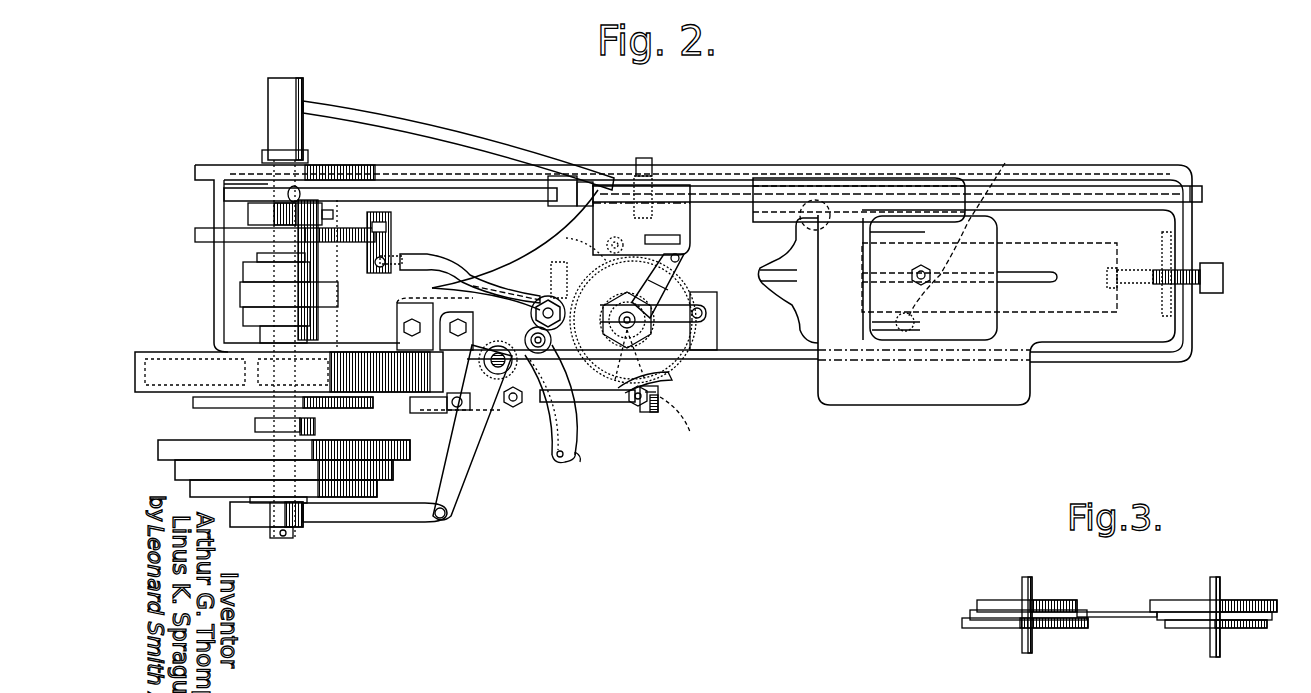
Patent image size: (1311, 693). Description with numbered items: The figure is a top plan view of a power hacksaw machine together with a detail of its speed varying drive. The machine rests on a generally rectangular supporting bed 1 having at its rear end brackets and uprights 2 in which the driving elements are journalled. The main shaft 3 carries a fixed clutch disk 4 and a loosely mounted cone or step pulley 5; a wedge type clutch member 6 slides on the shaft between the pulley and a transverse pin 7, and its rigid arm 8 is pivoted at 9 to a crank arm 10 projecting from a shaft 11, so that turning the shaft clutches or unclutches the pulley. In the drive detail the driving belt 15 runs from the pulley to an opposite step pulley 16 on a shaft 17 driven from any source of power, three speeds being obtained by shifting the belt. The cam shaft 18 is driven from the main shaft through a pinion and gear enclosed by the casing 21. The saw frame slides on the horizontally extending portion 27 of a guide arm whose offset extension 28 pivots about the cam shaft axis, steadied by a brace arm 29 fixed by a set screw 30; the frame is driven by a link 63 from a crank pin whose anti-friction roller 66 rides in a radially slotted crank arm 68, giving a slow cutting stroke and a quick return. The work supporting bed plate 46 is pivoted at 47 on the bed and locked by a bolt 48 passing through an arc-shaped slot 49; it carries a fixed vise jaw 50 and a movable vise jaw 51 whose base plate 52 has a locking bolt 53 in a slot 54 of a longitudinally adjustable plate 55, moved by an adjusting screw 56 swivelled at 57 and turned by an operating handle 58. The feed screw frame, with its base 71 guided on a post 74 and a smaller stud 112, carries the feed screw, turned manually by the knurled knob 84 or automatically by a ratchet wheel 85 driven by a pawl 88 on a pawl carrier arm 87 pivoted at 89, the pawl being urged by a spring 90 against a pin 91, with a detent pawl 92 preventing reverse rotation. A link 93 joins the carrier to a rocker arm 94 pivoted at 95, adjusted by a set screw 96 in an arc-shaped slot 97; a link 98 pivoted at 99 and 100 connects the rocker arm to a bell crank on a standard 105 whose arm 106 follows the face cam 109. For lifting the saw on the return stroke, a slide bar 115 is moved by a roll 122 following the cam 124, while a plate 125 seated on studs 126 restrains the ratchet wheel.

In FIG. 2, the supporting bed 1 is at (1166, 346).
In FIG. 2, the brackets and uprights 2 is at (242, 272).
In FIG. 2, the main shaft 3 is at (279, 540).
In FIG. 3, the main shaft 3 is at (1220, 590).
In FIG. 2, the clutch disk 4 is at (256, 426).
In FIG. 2, the pulley 5 is at (168, 458).
In FIG. 3, the pulley 5 is at (1276, 605).
In FIG. 2, the clutch member 6 is at (266, 512).
In FIG. 2, the transverse pin 7 is at (284, 538).
In FIG. 2, the rigid arm 8 is at (382, 512).
In FIG. 2, the pivot 9 is at (440, 520).
In FIG. 2, the crank arm 10 is at (470, 455).
In FIG. 2, the shaft 11 is at (497, 348).
In FIG. 3, the driving belt 15 is at (1135, 617).
In FIG. 3, the cone or step pulley 16 is at (978, 624).
In FIG. 3, the shaft 17 is at (1022, 641).
In FIG. 2, the cam shaft 18 is at (316, 428).
In FIG. 2, the casing 21 is at (138, 352).
In FIG. 2, the horizontally extending portion of saw guide arm 27 is at (1190, 193).
In FIG. 2, the offset extension 28 is at (465, 290).
In FIG. 2, the brace arm 29 is at (473, 141).
In FIG. 2, the set screw 30 is at (649, 166).
In FIG. 2, the work supporting bed plate 46 is at (823, 385).
In FIG. 2, the pivot 47 is at (833, 200).
In FIG. 2, the locking bolt 48 is at (908, 331).
In FIG. 2, the arc-shaped slot 49 is at (966, 228).
In FIG. 2, the fixed vise jaw 50 is at (806, 292).
In FIG. 2, the movable vise jaw 51 is at (864, 323).
In FIG. 2, the base plate 52 is at (993, 256).
In FIG. 2, the locking bolt 53 is at (918, 270).
In FIG. 2, the slot 54 is at (1040, 278).
In FIG. 2, the longitudinally adjustable plate 55 is at (1098, 243).
In FIG. 2, the adjusting screw 56 is at (1140, 272).
In FIG. 2, the swivel 57 is at (1112, 290).
In FIG. 2, the operating handle 58 is at (1208, 263).
In FIG. 2, the link 63 is at (483, 201).
In FIG. 2, the anti-friction roller 66 is at (276, 206).
In FIG. 2, the radially slotted crank arm 68 is at (246, 211).
In FIG. 2, the base 71 is at (693, 308).
In FIG. 2, the post 74 is at (545, 303).
In FIG. 2, the knurled knob 84 is at (618, 336).
In FIG. 2, the ratchet wheel 85 is at (672, 338).
In FIG. 2, the radially projecting arm 87 is at (651, 413).
In FIG. 2, the pawl 88 is at (664, 386).
In FIG. 2, the pivot 89 is at (633, 404).
In FIG. 2, the spring 90 is at (684, 424).
In FIG. 2, the pin 91 is at (660, 395).
In FIG. 2, the detent pawl 92 is at (575, 243).
In FIG. 2, the link 93 is at (603, 402).
In FIG. 2, the rocker arm 94 is at (547, 463).
In FIG. 2, the pivot 95 is at (533, 333).
In FIG. 2, the set screw 96 is at (533, 423).
In FIG. 2, the arc-shaped slot 97 is at (570, 450).
In FIG. 2, the link 98 is at (460, 396).
In FIG. 2, the pivotal connection 99 is at (512, 408).
In FIG. 2, the pivotal connection 100 is at (452, 412).
In FIG. 2, the standard 105 is at (403, 327).
In FIG. 2, the arm of bell crank lever 106 is at (407, 412).
In FIG. 2, the face cam 109 is at (194, 404).
In FIG. 2, the smaller stud 112 is at (703, 313).
In FIG. 2, the slide bar 115 is at (442, 267).
In FIG. 2, the roll 122 is at (366, 248).
In FIG. 2, the cam 124 is at (197, 236).
In FIG. 2, the plate 125 is at (670, 294).
In FIG. 2, the studs 126 is at (685, 272).